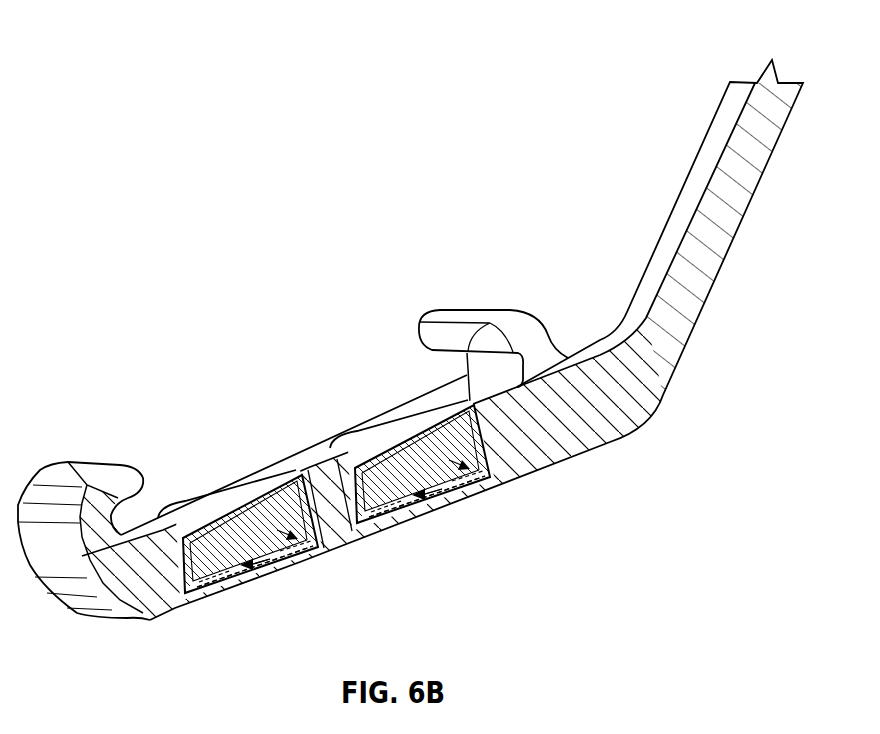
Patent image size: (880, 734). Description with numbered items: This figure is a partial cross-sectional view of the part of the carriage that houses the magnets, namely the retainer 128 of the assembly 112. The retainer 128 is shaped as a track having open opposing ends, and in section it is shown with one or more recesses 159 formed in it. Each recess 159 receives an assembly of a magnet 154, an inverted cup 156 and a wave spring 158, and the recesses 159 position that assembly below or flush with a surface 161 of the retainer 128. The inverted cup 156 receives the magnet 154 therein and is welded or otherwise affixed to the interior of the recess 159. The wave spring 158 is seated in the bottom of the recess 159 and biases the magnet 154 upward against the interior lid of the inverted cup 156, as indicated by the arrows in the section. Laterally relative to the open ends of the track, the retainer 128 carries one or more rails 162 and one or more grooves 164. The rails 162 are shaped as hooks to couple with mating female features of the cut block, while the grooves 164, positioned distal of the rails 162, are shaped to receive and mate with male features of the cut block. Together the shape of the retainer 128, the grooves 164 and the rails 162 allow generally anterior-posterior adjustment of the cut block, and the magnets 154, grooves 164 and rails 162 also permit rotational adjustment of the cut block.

The bracket assembly 112 is at (541, 62).
The retainer 128 is at (602, 438).
The magnets 154 is at (313, 553).
The inverted cups 156 is at (200, 501).
The wave springs 158 is at (233, 592).
The recesses 159 is at (265, 568).
The surface 161 is at (310, 452).
The rails 162 is at (68, 464).
The grooves 164 is at (414, 360).